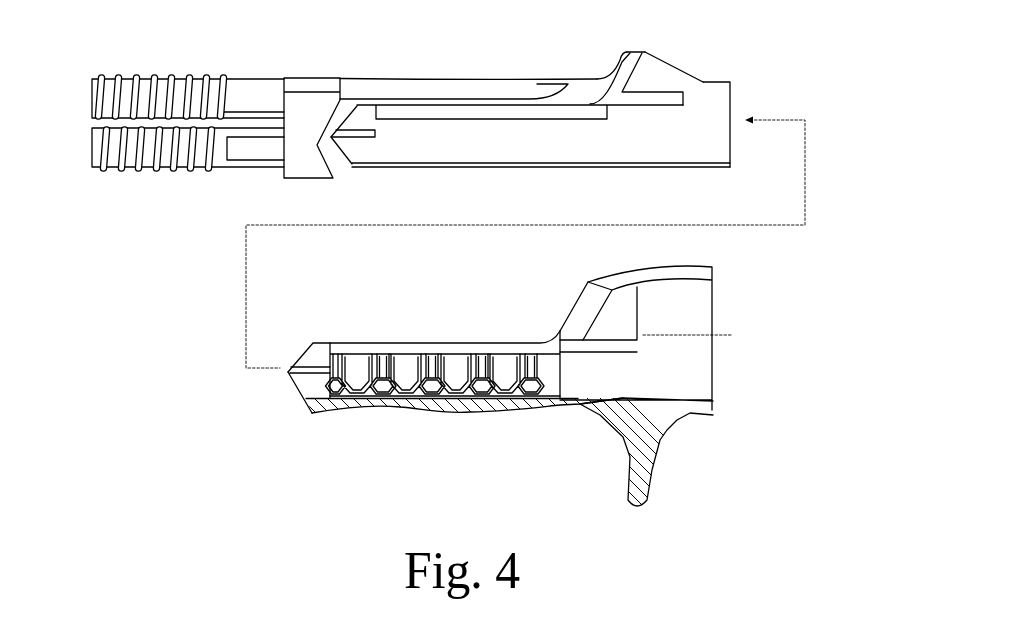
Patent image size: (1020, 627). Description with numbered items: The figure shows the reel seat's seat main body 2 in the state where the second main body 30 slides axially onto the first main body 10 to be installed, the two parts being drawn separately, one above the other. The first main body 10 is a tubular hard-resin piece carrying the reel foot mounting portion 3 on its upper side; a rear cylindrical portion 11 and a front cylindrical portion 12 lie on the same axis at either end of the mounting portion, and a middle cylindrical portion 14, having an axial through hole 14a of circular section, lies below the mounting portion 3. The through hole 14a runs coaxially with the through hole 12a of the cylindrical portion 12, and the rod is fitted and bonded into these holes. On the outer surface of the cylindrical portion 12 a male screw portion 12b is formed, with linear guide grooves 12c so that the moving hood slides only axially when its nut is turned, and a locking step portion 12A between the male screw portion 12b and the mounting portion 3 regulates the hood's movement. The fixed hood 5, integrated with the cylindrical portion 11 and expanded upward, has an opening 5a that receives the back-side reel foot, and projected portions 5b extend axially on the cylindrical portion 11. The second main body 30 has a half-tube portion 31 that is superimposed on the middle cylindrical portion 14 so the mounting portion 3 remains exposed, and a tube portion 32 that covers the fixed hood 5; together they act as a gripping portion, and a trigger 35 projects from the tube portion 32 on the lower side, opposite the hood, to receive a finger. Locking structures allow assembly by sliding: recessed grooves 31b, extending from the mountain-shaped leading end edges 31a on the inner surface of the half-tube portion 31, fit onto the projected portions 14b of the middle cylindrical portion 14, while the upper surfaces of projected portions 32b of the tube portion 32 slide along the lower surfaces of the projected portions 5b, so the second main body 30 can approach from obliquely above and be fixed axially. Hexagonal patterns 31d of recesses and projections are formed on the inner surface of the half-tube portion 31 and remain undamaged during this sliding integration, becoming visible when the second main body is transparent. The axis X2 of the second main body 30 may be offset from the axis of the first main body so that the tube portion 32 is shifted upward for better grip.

The first main body 10 is at (407, 108).
The cylindrical portion 12 is at (181, 128).
The locking step portion 12A is at (294, 102).
The through hole 12a is at (92, 152).
The male screw portion 12b is at (162, 168).
The guide groove 12c is at (98, 122).
The seat main body 2 is at (533, 117).
The reel foot mounting portion 3 is at (432, 80).
The fixed hood 5 is at (643, 63).
The opening 5a is at (615, 64).
The projected portion 5b is at (661, 97).
The cylindrical portion 11 is at (708, 98).
The middle cylindrical portion 14 is at (530, 159).
The through hole 14a is at (345, 153).
The projected portion 14b is at (365, 136).
The second main body 30 is at (389, 390).
The half-tube portion 31 is at (384, 390).
The leading end edge 31a is at (300, 357).
The recessed groove 31b is at (310, 373).
The pattern 31d is at (452, 365).
The tube portion 32 is at (389, 390).
The projected portion 32b is at (560, 331).
The trigger 35 is at (646, 473).
The axis X2 is at (701, 336).